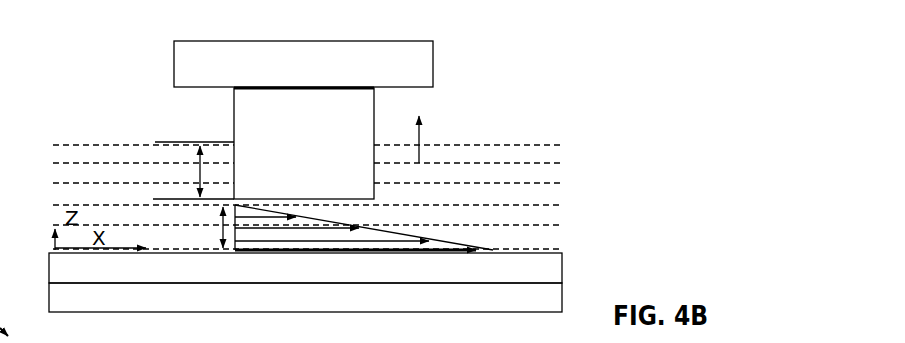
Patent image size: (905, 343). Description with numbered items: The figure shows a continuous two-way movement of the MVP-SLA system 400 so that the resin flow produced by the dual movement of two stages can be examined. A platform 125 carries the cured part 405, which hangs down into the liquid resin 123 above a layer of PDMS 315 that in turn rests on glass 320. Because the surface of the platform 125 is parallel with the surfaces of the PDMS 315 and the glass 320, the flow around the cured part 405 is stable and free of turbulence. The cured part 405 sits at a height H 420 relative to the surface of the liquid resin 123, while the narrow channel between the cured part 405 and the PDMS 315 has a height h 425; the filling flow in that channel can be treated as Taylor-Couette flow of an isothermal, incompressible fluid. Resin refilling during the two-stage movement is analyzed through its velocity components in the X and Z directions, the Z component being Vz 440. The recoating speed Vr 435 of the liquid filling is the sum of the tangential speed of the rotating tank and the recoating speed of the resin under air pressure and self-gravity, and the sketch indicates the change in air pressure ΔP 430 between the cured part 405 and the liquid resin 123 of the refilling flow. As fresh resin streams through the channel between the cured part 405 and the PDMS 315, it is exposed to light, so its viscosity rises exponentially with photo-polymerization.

The liquid resin 123 is at (558, 153).
The platform 125 is at (232, 40).
The cured part 405 is at (233, 125).
The height H 420 is at (165, 169).
The height h 425 is at (188, 237).
The change in air pressure ΔP 430 is at (328, 216).
The recoating speed Vr 435 is at (489, 236).
The velocity component Vz 440 is at (457, 119).
The PDMS 315 is at (555, 265).
The glass 320 is at (483, 297).
The MVP-SLA system 400 is at (593, 43).